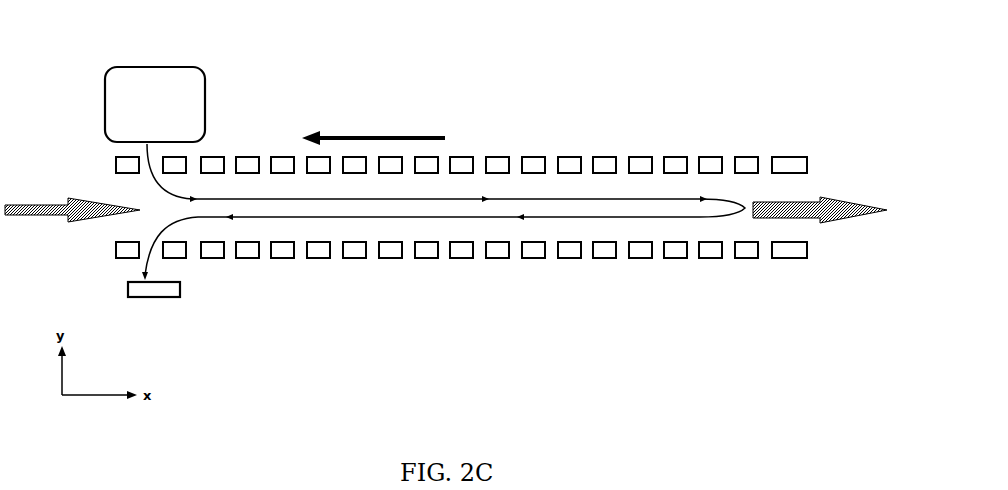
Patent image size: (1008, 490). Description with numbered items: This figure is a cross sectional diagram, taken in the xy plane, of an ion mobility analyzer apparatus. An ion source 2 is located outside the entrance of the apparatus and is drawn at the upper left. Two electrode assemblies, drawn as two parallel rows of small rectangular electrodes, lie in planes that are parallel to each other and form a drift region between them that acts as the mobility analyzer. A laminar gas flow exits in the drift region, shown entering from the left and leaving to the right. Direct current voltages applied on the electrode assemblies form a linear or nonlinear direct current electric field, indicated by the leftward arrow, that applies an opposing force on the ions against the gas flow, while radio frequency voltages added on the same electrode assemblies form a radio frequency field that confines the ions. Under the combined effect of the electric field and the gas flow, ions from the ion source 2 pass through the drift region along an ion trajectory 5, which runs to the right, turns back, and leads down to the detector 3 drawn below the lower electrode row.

The ion source 2 is at (155, 88).
The detector 3 is at (154, 311).
The ion trajectory 5 is at (443, 212).